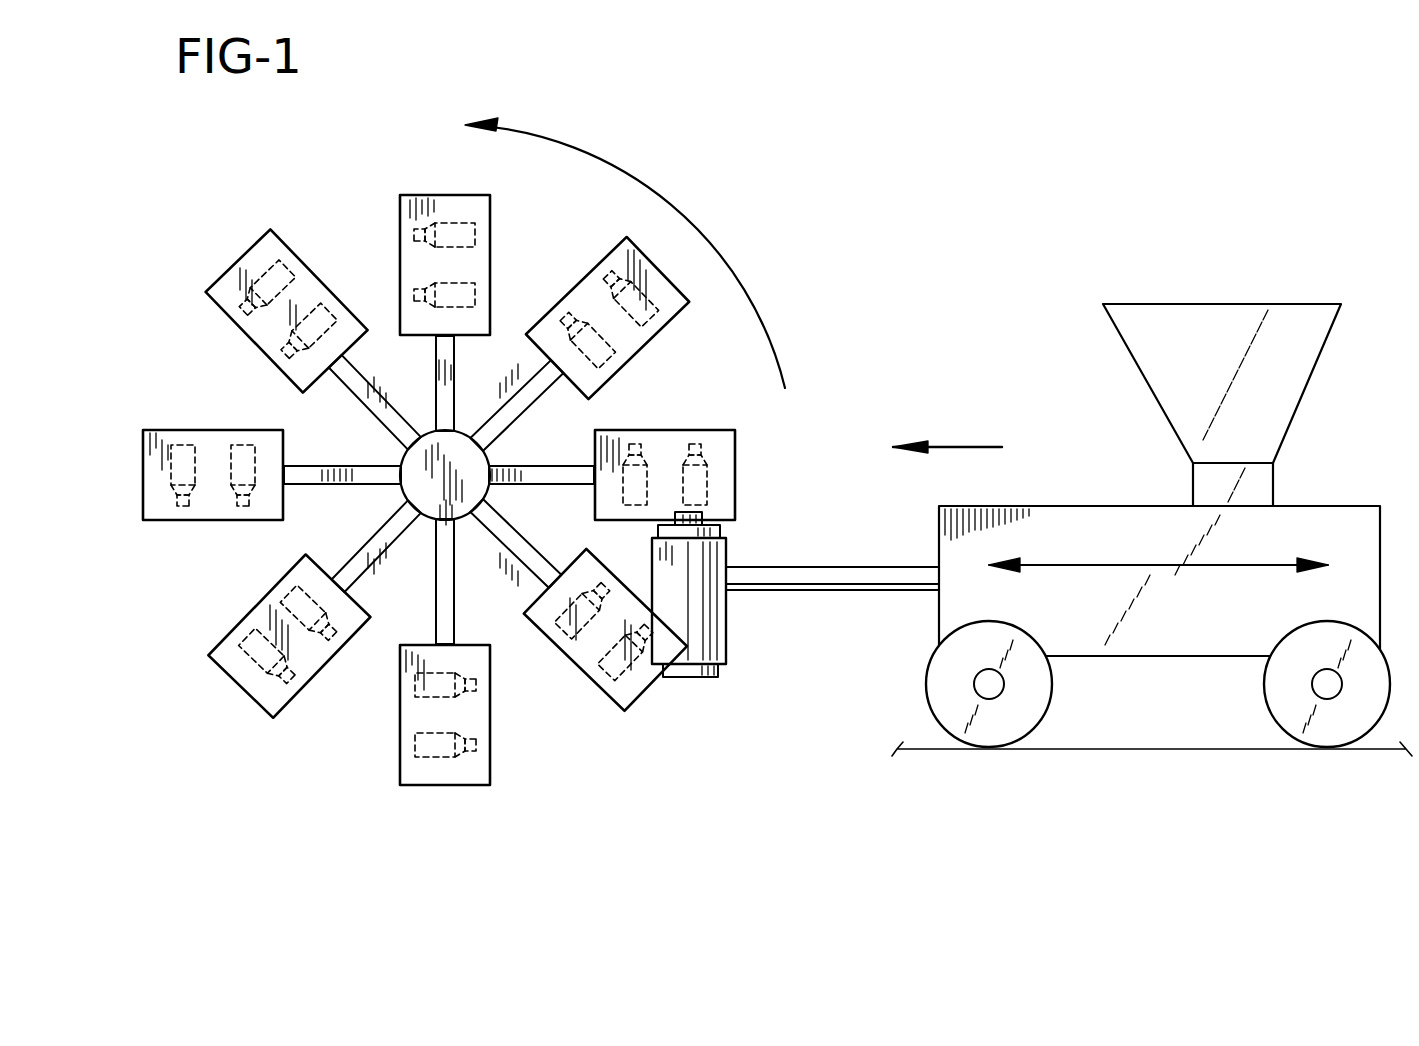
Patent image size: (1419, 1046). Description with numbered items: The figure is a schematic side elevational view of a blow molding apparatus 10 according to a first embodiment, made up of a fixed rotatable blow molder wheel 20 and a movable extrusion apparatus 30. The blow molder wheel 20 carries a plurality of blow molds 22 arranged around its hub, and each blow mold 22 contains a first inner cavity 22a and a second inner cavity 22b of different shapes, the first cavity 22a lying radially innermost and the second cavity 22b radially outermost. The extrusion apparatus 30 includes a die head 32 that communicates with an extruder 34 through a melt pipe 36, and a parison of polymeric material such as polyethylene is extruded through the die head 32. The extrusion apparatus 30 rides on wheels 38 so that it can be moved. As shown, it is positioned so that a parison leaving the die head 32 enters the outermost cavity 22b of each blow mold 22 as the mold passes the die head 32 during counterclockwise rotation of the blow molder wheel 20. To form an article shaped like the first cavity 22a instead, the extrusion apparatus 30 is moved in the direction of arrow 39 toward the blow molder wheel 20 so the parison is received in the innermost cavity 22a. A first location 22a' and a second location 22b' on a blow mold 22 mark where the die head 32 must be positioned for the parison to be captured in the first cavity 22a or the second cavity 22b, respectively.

The blow molding apparatus 10 is at (752, 216).
The blow molder wheel 20 is at (548, 248).
The blow mold 22 is at (404, 212).
The first inner cavity 22a is at (460, 500).
The second inner cavity 22b is at (499, 501).
The first location 22a' is at (394, 704).
The second location 22b' is at (389, 773).
The extrusion apparatus 30 is at (1323, 512).
The die head 32 is at (718, 555).
The extruder 34 is at (1068, 515).
The melt pipe 36 is at (800, 583).
The wheels 38 is at (1002, 740).
The arrow 39 is at (962, 447).